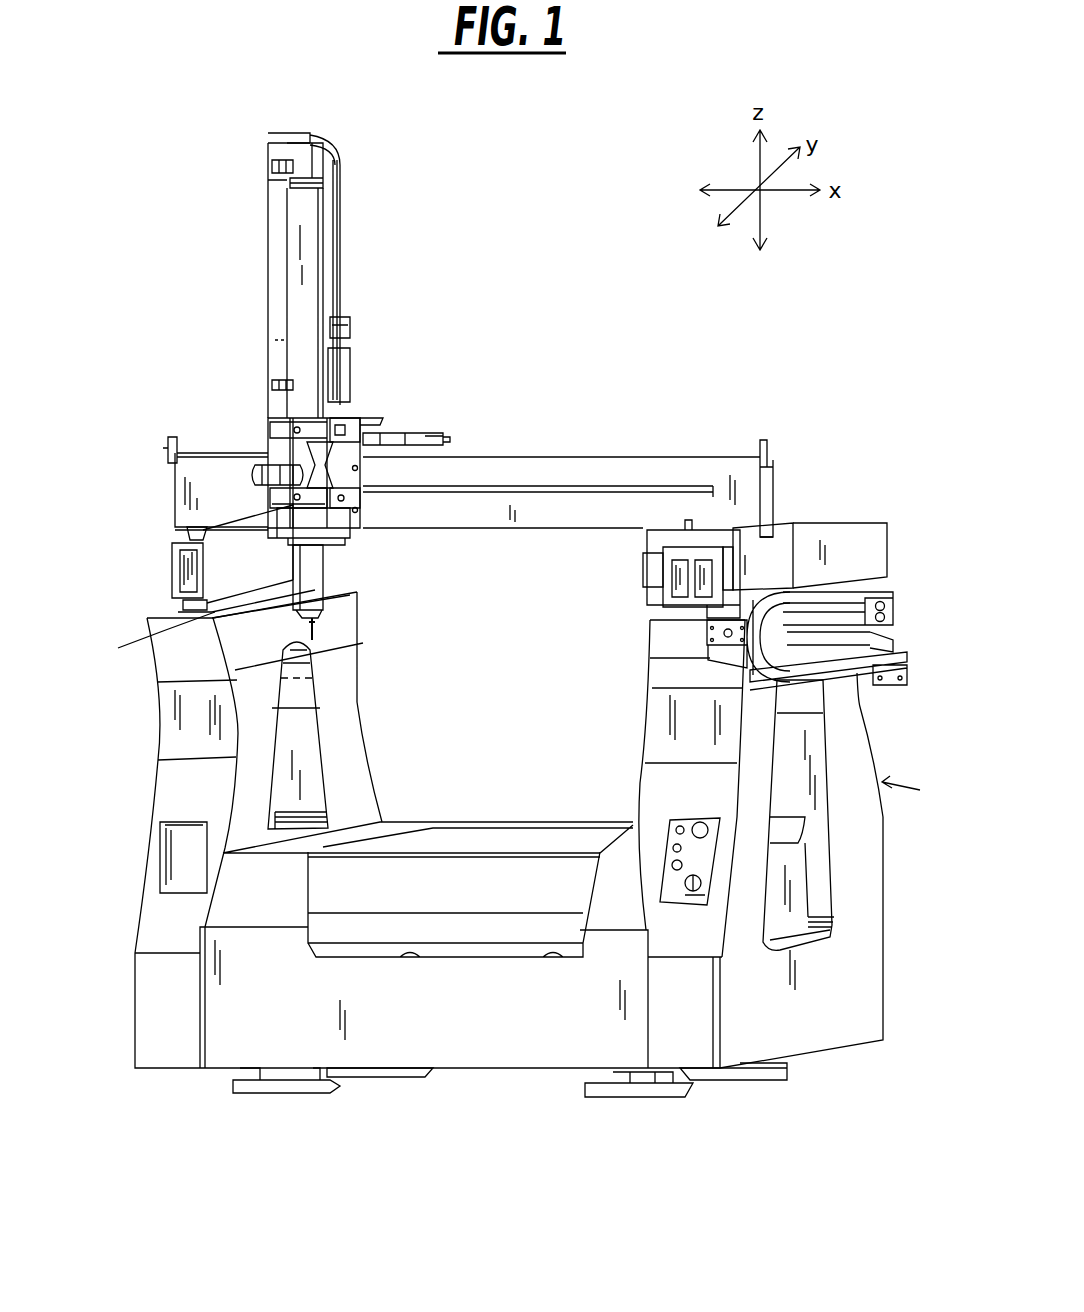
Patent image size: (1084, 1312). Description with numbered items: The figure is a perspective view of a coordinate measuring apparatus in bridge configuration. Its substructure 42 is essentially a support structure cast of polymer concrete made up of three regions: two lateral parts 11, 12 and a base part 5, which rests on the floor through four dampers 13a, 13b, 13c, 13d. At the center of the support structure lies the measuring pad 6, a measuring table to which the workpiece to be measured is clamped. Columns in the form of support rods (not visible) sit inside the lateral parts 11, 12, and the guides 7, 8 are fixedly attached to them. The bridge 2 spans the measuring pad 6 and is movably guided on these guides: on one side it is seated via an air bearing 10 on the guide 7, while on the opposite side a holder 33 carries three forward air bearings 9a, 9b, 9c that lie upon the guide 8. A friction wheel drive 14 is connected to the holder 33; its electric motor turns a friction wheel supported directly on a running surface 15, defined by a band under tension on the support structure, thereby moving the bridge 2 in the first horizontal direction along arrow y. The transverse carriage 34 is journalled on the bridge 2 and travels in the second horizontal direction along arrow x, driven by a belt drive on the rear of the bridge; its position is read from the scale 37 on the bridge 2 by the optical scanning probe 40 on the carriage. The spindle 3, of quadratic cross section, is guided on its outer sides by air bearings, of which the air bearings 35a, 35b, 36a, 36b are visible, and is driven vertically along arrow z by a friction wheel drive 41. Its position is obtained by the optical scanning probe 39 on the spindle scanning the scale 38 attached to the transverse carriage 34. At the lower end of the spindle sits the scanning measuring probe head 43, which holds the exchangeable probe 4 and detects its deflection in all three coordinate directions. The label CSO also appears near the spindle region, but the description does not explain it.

The bridge 2 is at (553, 470).
The spindle 3 is at (303, 312).
The probe 4 is at (335, 612).
The base part 5 is at (173, 915).
The measuring pad 6 is at (482, 843).
The guide 7 is at (186, 567).
The guide 8 is at (835, 525).
The air bearing 9a is at (672, 527).
The air bearing 9b is at (640, 578).
The air bearing 9c is at (733, 537).
The air bearing 10 is at (188, 537).
The lateral part 11 is at (350, 688).
The lateral part 12 is at (665, 697).
The damper 13a is at (283, 1085).
The damper 13b is at (390, 1075).
The damper 13c is at (745, 1080).
The damper 13d is at (650, 1080).
The friction wheel drive 14 is at (865, 622).
The running surface 15 is at (858, 590).
The holder 33 is at (782, 548).
The transverse carriage 34 is at (370, 420).
The air bearing 35a is at (293, 423).
The air bearing 35b is at (345, 424).
The air bearing 36a is at (297, 500).
The air bearing 36b is at (370, 490).
The scale 37 is at (690, 488).
The scale 38 is at (270, 218).
The optical scanning probe 39 is at (280, 185).
The optical scanning probe 40 is at (388, 463).
The friction wheel drive 41 is at (268, 460).
The substructure 42 is at (917, 792).
The scanning measuring probe head 43 is at (149, 639).
The spindle CSO is at (325, 590).